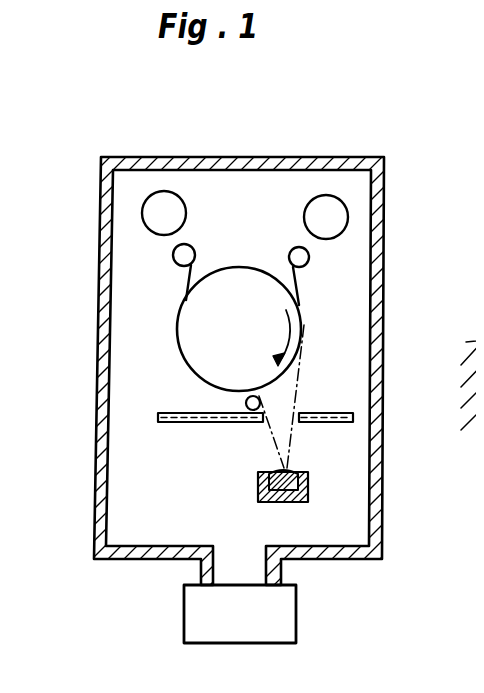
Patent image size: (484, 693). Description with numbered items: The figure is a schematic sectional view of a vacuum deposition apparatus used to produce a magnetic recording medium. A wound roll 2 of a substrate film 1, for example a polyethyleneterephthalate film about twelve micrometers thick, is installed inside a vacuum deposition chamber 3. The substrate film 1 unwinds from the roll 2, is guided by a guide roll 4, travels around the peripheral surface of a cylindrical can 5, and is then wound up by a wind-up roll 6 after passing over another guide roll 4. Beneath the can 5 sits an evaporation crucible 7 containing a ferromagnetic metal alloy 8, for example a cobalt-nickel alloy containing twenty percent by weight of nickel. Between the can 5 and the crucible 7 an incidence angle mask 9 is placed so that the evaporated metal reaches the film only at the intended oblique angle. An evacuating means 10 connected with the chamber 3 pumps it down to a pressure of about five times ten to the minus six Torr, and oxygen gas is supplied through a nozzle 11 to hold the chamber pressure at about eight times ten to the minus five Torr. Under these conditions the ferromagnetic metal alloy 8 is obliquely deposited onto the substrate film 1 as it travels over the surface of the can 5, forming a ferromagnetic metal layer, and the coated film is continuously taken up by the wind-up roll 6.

The substrate film 1 is at (187, 282).
The wound roll 2 is at (326, 194).
The vacuum deposition chamber 3 is at (383, 195).
The guide roll 4 is at (172, 254).
The cylindrical can 5 is at (300, 321).
The wind-up roll 6 is at (153, 213).
The evaporation crucible 7 is at (307, 495).
The ferromagnetic metal alloy 8 is at (295, 470).
The incidence angle mask 9 is at (333, 414).
The evacuating means 10 is at (287, 613).
The nozzle 11 is at (245, 400).